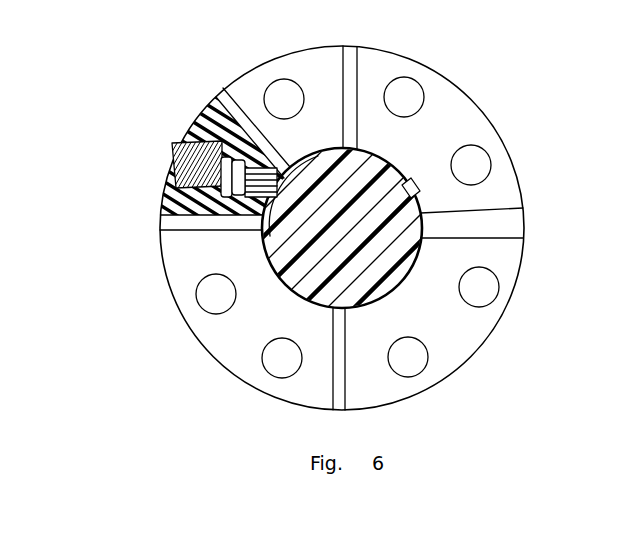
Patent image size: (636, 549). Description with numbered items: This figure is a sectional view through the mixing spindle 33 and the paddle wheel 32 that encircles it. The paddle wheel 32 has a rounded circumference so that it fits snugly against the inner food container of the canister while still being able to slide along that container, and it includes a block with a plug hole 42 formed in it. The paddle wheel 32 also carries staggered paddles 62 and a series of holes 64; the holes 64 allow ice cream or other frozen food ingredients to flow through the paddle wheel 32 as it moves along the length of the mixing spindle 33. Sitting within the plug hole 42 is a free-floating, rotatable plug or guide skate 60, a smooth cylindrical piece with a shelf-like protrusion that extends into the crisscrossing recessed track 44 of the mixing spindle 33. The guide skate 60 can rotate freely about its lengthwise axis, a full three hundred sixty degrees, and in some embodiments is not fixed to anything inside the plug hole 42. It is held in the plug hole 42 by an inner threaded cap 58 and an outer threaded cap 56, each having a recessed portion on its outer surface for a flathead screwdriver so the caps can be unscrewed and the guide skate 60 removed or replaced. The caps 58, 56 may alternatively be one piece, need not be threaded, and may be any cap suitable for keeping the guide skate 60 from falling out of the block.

The paddle wheel 32 is at (482, 96).
The mixing spindle 33 is at (309, 281).
The plug hole 42 is at (217, 122).
The crisscrossing recessed track 44 is at (317, 62).
The outer threaded cap 56 is at (221, 154).
The inner threaded cap 58 is at (221, 183).
The guide skate 60 is at (248, 200).
The staggered paddles 62 is at (487, 238).
The holes 64 is at (476, 308).